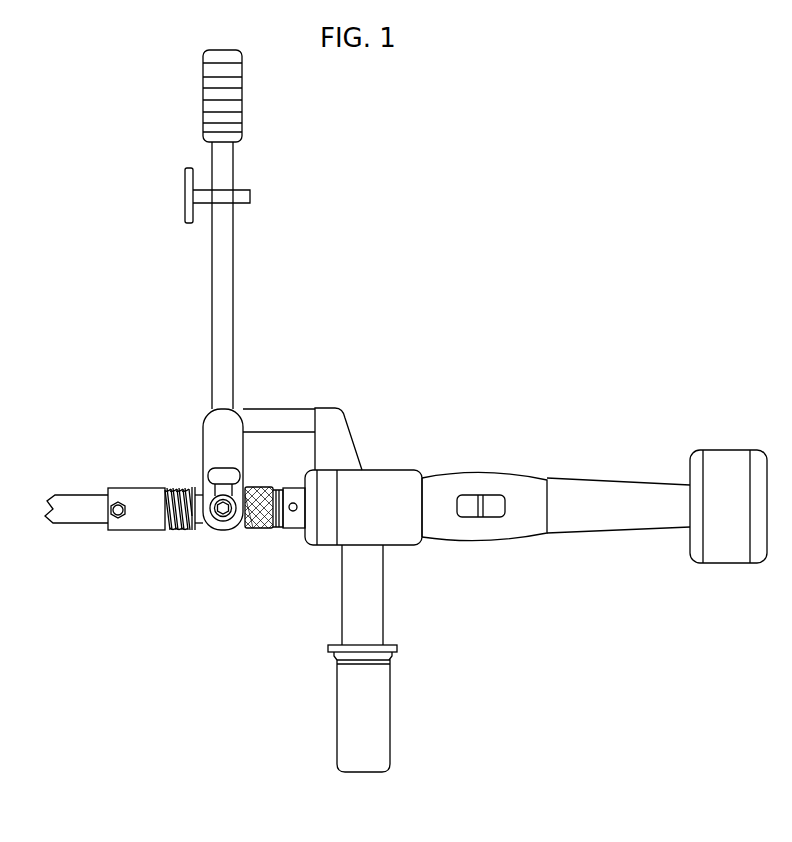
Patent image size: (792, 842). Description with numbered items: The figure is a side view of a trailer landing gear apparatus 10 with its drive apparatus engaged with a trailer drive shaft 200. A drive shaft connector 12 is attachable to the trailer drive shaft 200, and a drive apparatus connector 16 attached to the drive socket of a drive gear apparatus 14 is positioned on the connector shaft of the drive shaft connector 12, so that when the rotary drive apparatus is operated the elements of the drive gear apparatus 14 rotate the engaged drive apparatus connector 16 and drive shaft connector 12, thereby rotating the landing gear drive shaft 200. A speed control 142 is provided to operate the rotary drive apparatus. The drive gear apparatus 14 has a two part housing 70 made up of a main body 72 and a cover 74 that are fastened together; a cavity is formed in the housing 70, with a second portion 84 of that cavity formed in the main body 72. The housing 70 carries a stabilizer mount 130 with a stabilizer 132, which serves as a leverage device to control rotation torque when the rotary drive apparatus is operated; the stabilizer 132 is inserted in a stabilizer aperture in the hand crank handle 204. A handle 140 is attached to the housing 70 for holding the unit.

The trailer landing gear apparatus 10 is at (452, 238).
The drive shaft connector 12 is at (200, 575).
The drive gear apparatus 14 is at (289, 575).
The drive apparatus connector 16 is at (246, 576).
The housing 70 is at (397, 478).
The main body 72 is at (410, 540).
The cover 74 is at (325, 543).
The second portion 84 is at (188, 225).
The stabilizer mount 130 is at (335, 420).
The stabilizer 132 is at (278, 422).
The handle 140 is at (378, 723).
The speed control 142 is at (481, 494).
The trailer drive shaft 200 is at (77, 505).
The hand crank handle 204 is at (225, 258).